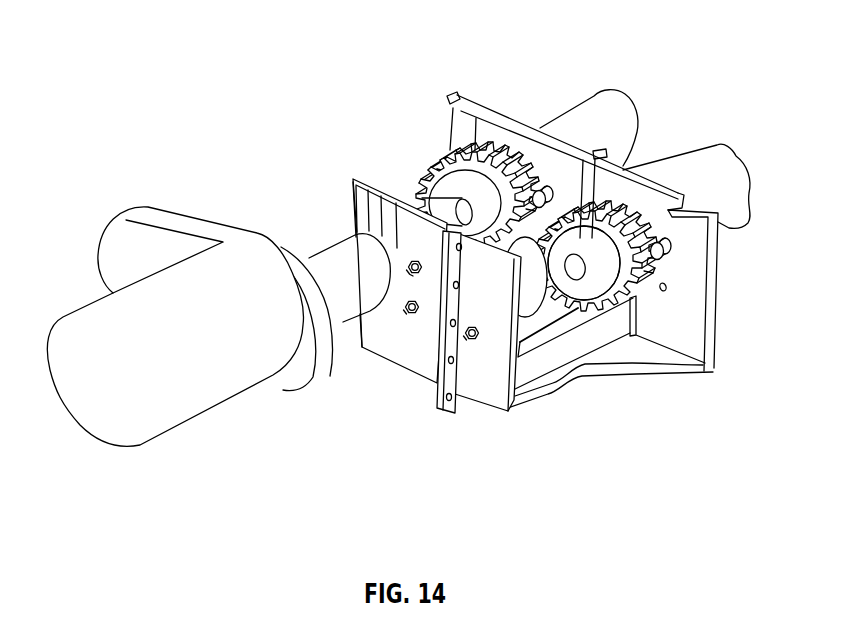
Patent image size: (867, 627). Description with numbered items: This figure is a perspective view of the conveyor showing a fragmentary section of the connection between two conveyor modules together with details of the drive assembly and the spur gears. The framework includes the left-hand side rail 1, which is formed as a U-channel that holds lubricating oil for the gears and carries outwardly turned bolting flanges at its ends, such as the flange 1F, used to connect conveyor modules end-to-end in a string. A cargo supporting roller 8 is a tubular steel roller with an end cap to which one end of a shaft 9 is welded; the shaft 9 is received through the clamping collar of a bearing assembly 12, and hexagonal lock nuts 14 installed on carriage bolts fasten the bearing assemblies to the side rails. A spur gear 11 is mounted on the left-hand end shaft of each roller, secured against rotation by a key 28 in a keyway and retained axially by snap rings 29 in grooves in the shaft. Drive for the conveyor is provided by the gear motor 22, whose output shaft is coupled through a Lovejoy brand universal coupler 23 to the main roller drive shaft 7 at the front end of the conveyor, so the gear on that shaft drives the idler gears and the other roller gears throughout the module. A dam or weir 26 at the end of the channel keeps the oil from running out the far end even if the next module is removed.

The left-hand side rail 1 is at (410, 372).
The frame bracket flange 1F is at (436, 397).
The main roller drive shaft 7 is at (433, 213).
The cargo supporting roller 8 is at (617, 92).
The shaft 9 is at (578, 273).
The spur gear 11 is at (450, 152).
The bearing assembly 12 is at (671, 250).
The hexagonal lock nut 14 is at (410, 263).
The gear motor 22 is at (189, 326).
The universal coupler 23 is at (493, 115).
The dam or weir 26 is at (573, 365).
The key 28 is at (586, 268).
The snap ring 29 is at (580, 278).